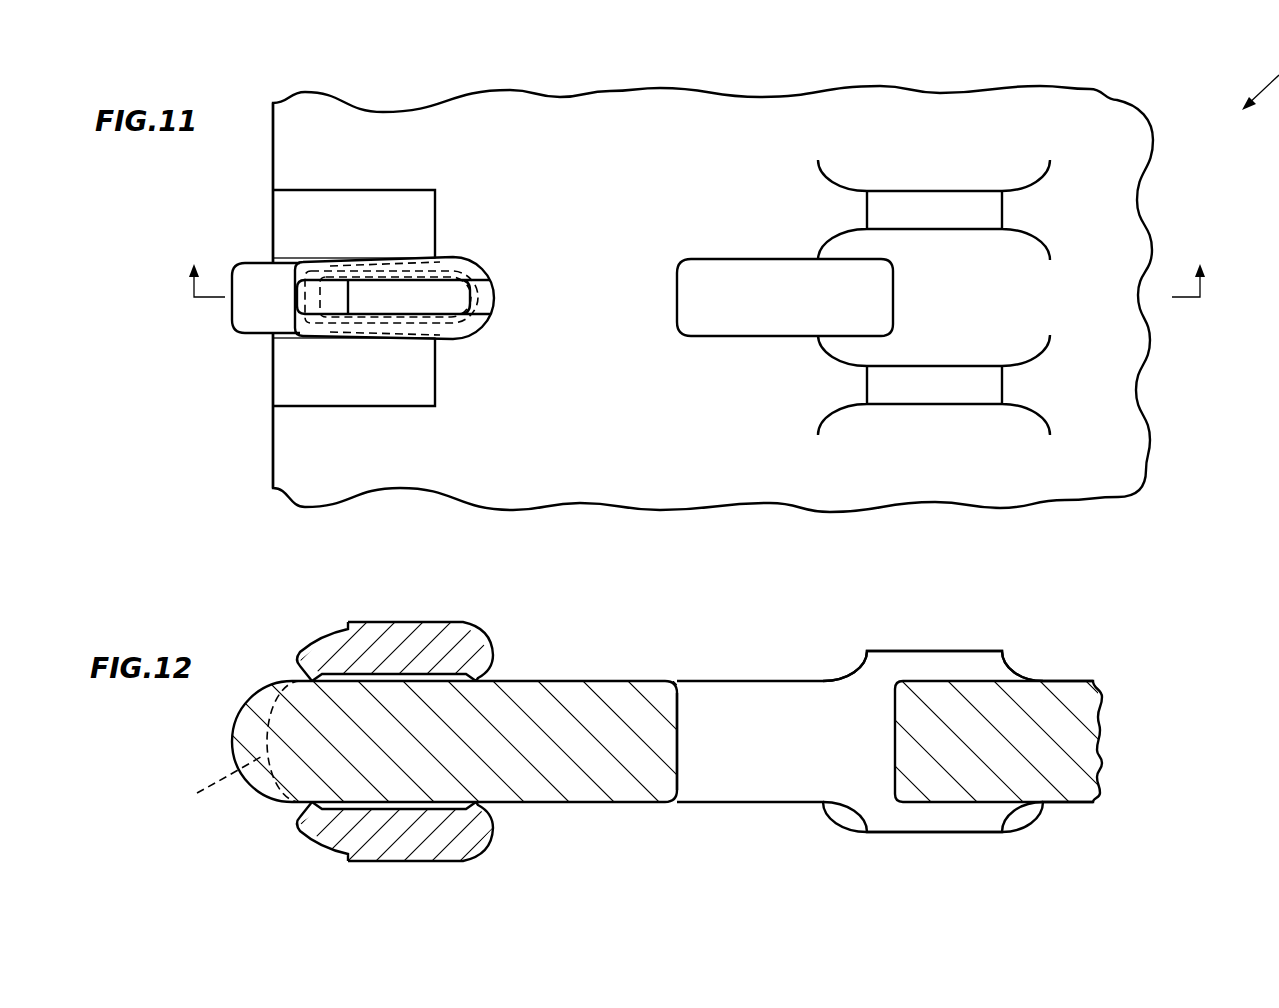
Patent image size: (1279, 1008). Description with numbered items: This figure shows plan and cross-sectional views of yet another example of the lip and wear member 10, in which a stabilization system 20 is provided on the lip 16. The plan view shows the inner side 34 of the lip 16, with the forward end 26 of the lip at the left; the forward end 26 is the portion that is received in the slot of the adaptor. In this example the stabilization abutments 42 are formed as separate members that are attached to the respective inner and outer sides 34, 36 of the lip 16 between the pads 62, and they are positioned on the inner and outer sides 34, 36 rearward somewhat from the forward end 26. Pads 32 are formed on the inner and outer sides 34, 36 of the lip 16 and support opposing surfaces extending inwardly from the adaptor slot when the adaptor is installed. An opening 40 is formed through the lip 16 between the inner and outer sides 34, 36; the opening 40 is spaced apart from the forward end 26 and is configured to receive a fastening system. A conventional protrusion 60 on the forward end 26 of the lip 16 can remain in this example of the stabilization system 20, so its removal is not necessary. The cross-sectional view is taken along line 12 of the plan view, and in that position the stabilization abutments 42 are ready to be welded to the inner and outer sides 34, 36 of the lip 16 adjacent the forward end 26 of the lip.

In FIG. 12, the latch assembly 10 is at (1155, 587).
In FIG. 11, the section line 12- 12 is at (698, 269).
In FIG. 11, the lip 16 is at (821, 518).
In FIG. 12, the lip 16 is at (1084, 675).
In FIG. 11, the stabilization system 20 is at (499, 240).
In FIG. 12, the stabilization system 20 is at (544, 640).
In FIG. 11, the forward end 26 is at (272, 421).
In FIG. 12, the forward end 26 is at (230, 747).
In FIG. 11, the pads 32 is at (935, 210).
In FIG. 12, the pads 32 is at (951, 650).
In FIG. 11, the inner side 34 is at (768, 118).
In FIG. 12, the inner side 34 is at (603, 680).
In FIG. 12, the outer side 36 is at (597, 803).
In FIG. 11, the opening 40 is at (757, 270).
In FIG. 12, the opening 40 is at (679, 716).
In FIG. 11, the stabilization abutments 42 is at (408, 318).
In FIG. 12, the stabilization abutments 42 is at (433, 621).
In FIG. 11, the protrusion 60 is at (226, 315).
In FIG. 11, the pads 62 is at (390, 210).